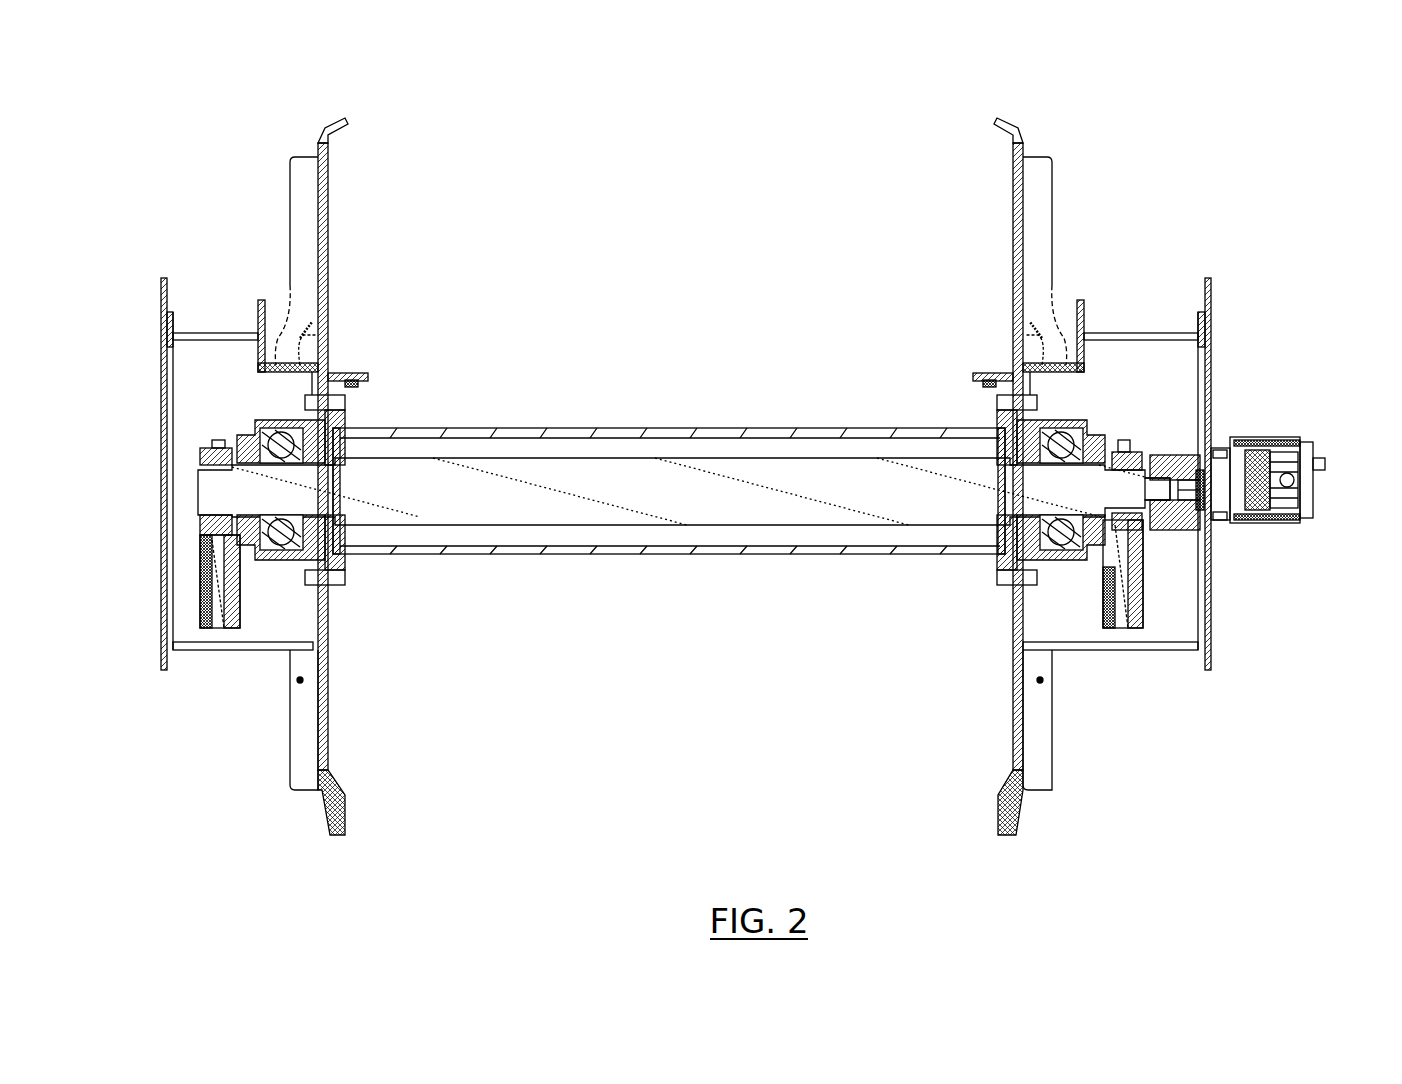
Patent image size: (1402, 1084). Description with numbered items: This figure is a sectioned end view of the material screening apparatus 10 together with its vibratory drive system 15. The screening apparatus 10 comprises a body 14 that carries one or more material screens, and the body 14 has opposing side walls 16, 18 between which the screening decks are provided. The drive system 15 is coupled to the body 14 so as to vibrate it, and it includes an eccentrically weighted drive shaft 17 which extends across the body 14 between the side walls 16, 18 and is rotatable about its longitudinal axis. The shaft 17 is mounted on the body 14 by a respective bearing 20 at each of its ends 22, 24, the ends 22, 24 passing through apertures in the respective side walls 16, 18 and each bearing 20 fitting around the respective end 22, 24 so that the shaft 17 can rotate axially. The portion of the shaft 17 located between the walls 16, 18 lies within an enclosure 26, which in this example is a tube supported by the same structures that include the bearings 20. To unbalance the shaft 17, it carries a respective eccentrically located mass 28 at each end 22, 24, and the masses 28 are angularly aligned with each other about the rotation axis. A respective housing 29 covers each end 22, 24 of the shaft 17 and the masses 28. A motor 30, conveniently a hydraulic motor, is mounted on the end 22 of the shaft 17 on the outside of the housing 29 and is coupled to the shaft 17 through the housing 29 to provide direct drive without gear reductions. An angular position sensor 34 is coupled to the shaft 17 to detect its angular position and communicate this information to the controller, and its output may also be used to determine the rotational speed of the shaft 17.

The material screening apparatus 10 is at (1118, 122).
The body 14 is at (305, 770).
The vibratory drive system 15 is at (1183, 412).
The side wall 16 is at (1020, 140).
The drive shaft 17 is at (680, 475).
The side wall 18 is at (316, 195).
The bearing 20 is at (262, 420).
The end of shaft 22 is at (1142, 490).
The end of shaft 24 is at (220, 490).
The enclosure 26 is at (543, 432).
The mass 28 is at (201, 585).
The housing 29 is at (163, 350).
The motor 30 is at (1311, 452).
The angular position sensor 34 is at (262, 436).